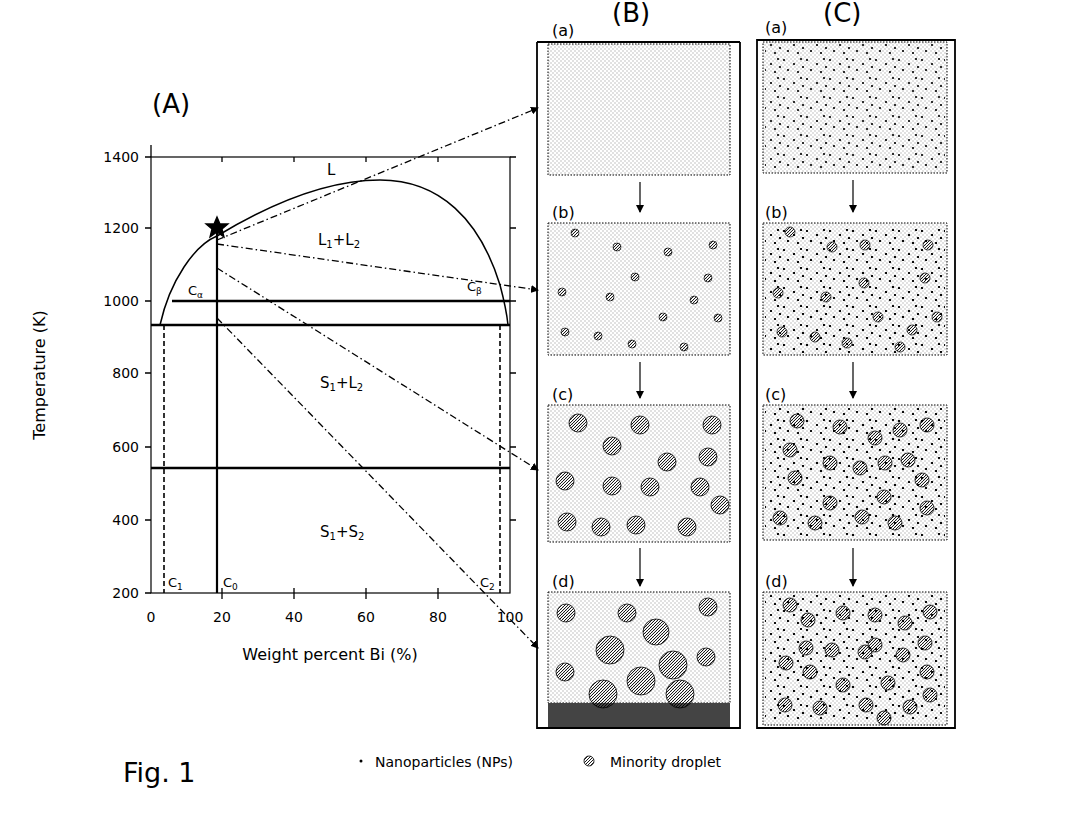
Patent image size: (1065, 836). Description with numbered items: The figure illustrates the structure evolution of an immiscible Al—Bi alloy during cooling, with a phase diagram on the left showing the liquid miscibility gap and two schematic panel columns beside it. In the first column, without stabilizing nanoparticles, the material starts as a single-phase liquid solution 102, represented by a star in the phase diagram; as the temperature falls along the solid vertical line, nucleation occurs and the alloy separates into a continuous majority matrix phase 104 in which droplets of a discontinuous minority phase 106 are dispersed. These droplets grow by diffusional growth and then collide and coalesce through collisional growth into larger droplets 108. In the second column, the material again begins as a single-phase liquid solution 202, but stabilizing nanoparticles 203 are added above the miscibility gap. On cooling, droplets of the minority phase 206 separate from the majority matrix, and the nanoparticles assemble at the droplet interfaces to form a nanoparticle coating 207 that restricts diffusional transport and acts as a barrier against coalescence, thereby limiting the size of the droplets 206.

The single-phase liquid solution 102 is at (722, 69).
The continuous majority matrix phase 104 is at (602, 279).
The droplets of discontinuous minority phase 106 is at (668, 256).
The larger droplets 108 is at (669, 452).
The single-phase liquid solution 202 is at (819, 81).
The stabilizing nanoparticles 203 is at (933, 118).
The droplets of minority phase 206 is at (938, 317).
The nanoparticle coating 207 is at (925, 428).